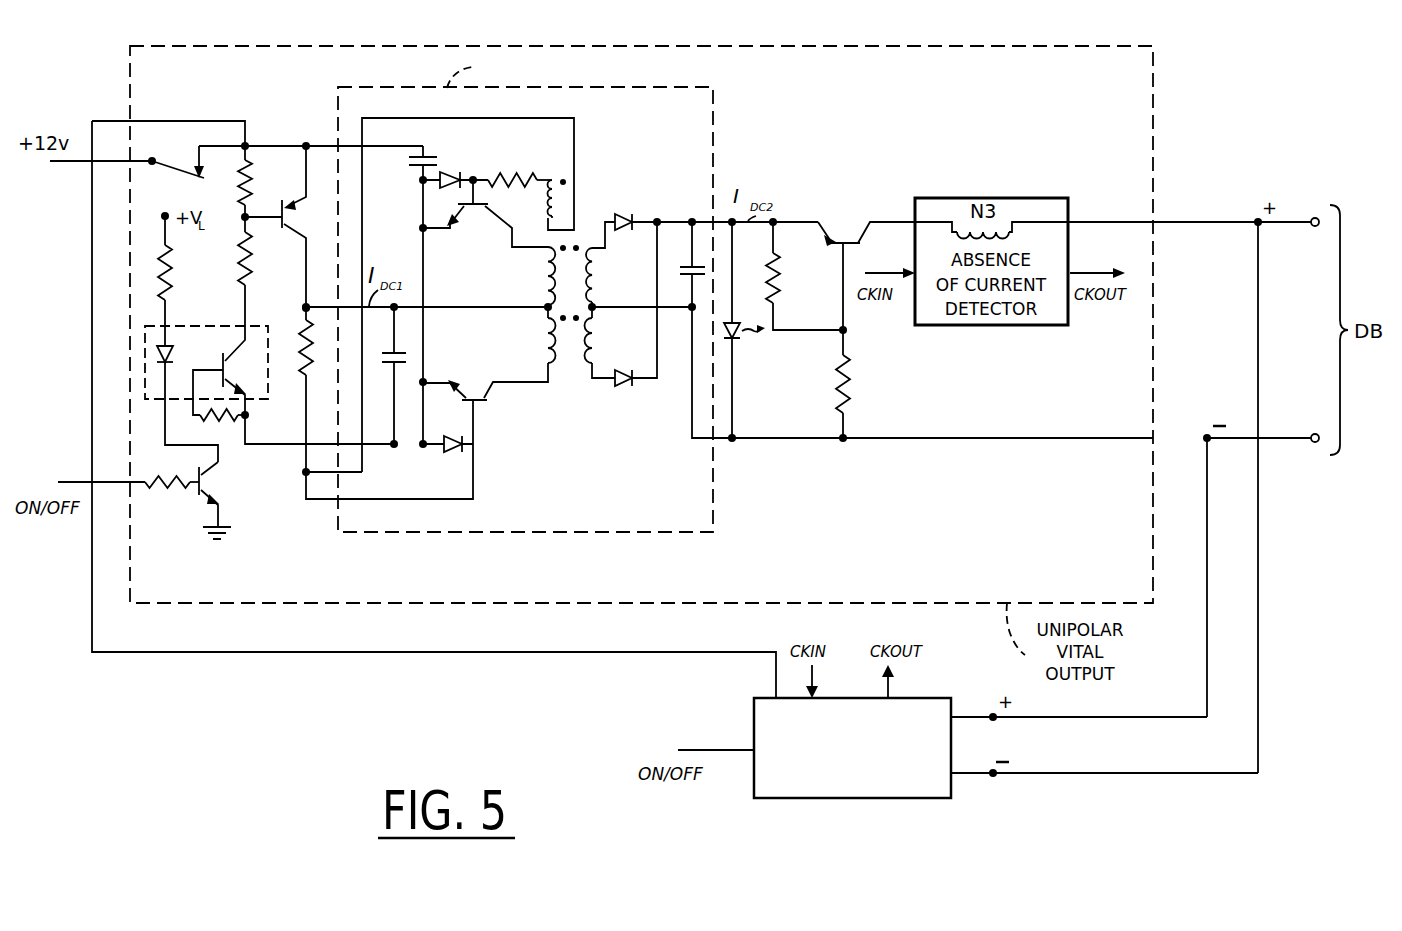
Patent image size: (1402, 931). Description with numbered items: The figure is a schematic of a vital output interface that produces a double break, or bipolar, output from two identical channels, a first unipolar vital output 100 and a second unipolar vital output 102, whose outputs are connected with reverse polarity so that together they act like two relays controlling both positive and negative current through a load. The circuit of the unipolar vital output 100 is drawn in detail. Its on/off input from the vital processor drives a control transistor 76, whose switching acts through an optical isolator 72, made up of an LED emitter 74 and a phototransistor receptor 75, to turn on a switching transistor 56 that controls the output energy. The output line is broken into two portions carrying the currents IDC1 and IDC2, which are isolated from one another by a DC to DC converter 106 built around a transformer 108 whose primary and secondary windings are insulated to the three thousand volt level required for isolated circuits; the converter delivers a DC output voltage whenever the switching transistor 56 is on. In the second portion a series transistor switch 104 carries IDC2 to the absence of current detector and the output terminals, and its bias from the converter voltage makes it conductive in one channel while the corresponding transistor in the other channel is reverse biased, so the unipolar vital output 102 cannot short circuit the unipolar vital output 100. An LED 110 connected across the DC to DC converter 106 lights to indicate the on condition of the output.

The switching transistor 56 is at (286, 201).
The optical isolator 72 is at (260, 325).
The LED emitter 74 is at (177, 350).
The phototransistor receptor 75 is at (250, 397).
The control transistor 76 is at (215, 473).
The unipolar vital output 100 is at (1155, 118).
The unipolar vital output 102 is at (893, 800).
The series transistor switch 104 is at (827, 228).
The DC to DC converter 106 is at (715, 136).
The transformer 108 is at (570, 372).
The LED 110 is at (739, 339).